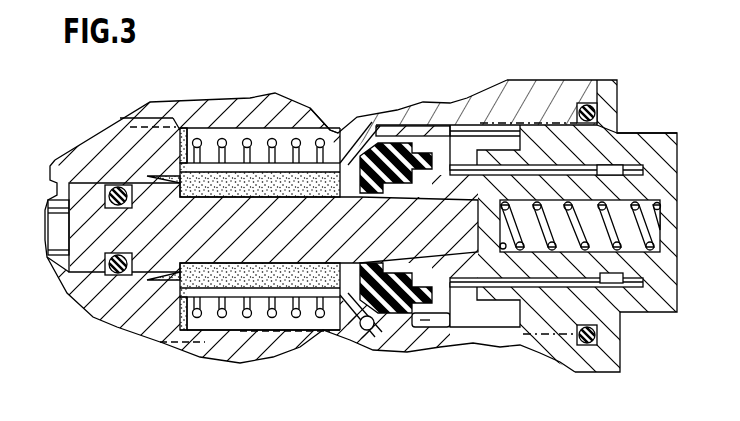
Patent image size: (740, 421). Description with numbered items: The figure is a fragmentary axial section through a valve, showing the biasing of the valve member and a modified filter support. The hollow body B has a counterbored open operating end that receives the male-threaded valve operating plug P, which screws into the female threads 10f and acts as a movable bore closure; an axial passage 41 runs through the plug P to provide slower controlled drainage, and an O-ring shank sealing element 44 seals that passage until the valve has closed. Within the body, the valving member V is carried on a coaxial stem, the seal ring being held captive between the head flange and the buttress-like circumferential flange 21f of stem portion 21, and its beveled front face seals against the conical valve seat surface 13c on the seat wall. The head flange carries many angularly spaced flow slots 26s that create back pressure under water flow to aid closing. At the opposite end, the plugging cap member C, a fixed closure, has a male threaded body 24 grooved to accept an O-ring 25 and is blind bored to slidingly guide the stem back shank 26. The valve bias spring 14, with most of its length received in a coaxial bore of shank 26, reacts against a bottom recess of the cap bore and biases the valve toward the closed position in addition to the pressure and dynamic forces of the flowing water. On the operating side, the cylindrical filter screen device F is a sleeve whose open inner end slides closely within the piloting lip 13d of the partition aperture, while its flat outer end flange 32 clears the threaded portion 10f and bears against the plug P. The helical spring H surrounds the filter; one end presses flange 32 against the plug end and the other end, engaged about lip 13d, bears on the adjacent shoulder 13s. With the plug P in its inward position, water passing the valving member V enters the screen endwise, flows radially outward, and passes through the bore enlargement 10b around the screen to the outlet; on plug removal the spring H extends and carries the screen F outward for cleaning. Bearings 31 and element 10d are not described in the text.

The valve operating plug P is at (90, 140).
The shank sealing element 44 is at (70, 157).
The axial passage 41 is at (53, 222).
The outer end flange 32 is at (180, 140).
The stem front portion 21 is at (231, 240).
The piloting lip 13d is at (300, 163).
The filter bias and support helical spring H is at (273, 130).
The balls 31 is at (249, 139).
The filter screen device F is at (229, 138).
The shoulder 13s is at (334, 128).
The hollow body B is at (374, 108).
The buttress-like circumferential flange 21f is at (352, 318).
The valving member V is at (398, 138).
The flow slots 26s is at (450, 124).
The stem back shank 26 is at (483, 100).
The O-ring 25 is at (587, 102).
The plugging cap member C is at (633, 80).
The male threaded body 24 is at (613, 147).
The sleeve 10d is at (546, 246).
The valve bias spring 14 is at (653, 245).
The bore enlargement 10b is at (263, 360).
The female threads 10f is at (212, 347).
The conical valve seat surface 13c is at (358, 331).